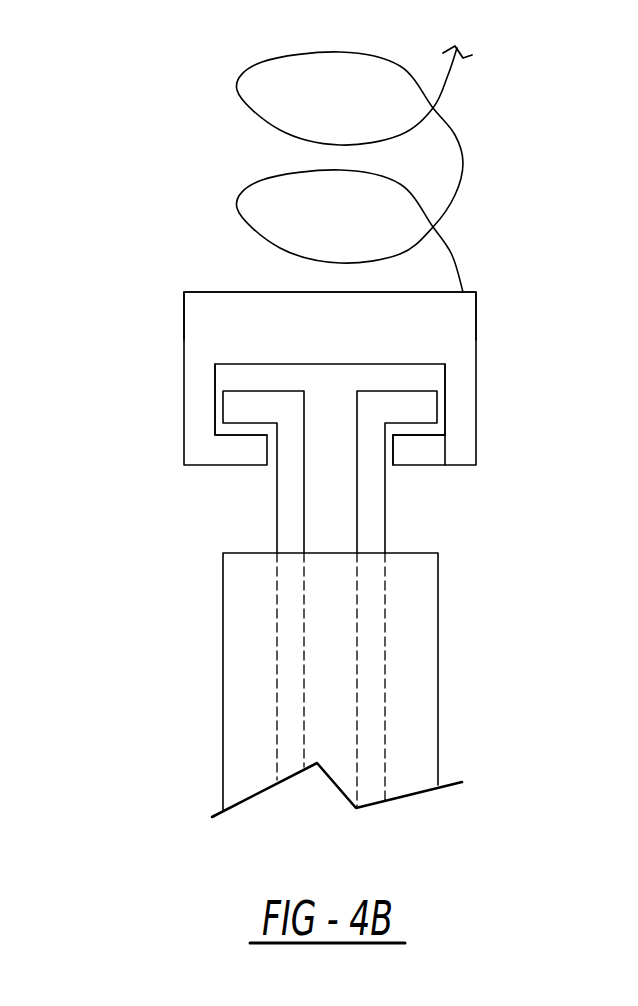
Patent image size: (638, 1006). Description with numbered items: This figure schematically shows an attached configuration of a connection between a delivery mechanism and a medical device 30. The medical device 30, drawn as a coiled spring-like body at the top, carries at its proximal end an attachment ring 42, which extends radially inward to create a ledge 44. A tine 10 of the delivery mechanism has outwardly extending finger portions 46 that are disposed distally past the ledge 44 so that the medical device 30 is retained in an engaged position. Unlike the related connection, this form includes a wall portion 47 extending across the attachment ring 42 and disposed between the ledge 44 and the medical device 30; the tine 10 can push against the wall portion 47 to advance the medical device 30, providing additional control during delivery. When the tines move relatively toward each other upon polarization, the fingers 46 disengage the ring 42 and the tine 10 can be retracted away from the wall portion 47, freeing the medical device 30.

The tine 10 is at (372, 527).
The medical device 30 is at (455, 83).
The attachment ring 42 is at (476, 355).
The ledge 44 is at (413, 453).
The finger portions 46 is at (245, 402).
The wall portion 47 is at (387, 325).